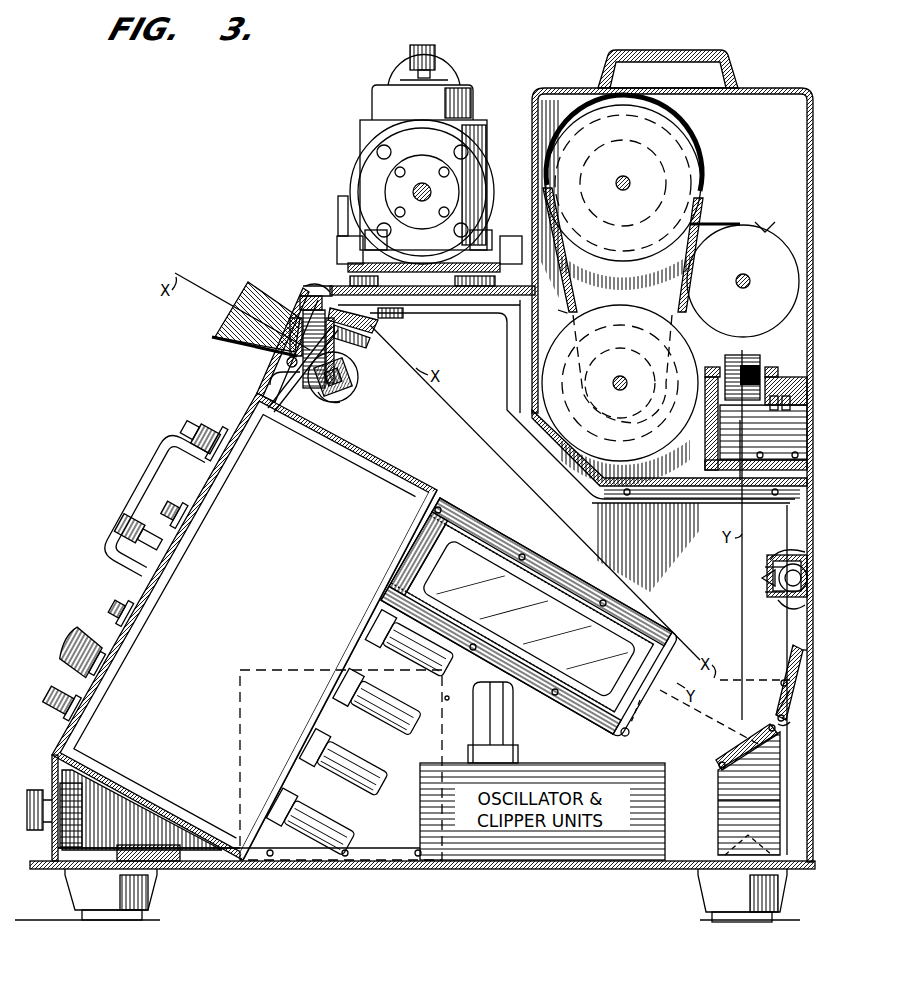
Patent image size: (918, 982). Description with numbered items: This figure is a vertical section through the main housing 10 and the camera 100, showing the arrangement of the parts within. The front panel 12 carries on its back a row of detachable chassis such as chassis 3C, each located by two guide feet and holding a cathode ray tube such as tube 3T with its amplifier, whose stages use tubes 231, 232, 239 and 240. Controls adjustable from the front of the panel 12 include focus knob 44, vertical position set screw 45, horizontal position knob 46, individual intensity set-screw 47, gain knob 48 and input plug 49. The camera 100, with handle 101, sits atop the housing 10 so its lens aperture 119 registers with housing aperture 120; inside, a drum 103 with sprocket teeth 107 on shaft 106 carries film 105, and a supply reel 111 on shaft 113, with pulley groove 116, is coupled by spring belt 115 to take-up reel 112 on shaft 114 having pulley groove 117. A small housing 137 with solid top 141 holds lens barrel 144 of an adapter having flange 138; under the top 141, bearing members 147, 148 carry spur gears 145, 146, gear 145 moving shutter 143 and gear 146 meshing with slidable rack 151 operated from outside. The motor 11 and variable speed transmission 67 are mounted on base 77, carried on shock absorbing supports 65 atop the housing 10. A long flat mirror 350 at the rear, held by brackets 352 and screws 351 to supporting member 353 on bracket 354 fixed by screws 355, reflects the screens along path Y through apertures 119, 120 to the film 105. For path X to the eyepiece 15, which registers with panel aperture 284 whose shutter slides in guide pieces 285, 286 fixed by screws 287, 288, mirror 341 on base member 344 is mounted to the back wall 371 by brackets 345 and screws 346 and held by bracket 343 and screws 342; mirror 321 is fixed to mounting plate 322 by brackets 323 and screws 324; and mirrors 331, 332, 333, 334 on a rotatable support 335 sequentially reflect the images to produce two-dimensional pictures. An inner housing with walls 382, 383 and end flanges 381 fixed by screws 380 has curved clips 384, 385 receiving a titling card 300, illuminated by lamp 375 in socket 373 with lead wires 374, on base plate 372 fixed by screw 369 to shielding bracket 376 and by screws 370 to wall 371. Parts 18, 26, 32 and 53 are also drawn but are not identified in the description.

The housing 10 is at (382, 875).
The motor 11 is at (352, 185).
The front panel 12 is at (250, 428).
The eyepiece 15 is at (245, 295).
The bracket 18 is at (153, 507).
The clip 26 is at (35, 792).
The support block 32 is at (60, 800).
The knob 44 is at (212, 436).
The set screw 45 is at (200, 503).
The knob 46 is at (147, 550).
The set-screw 47 is at (132, 612).
The knob 48 is at (100, 650).
The plug 49 is at (74, 706).
The foot 53 is at (76, 893).
The shock absorbing supports 65 is at (350, 288).
The variable speed transmission 67 is at (372, 108).
The base 77 is at (348, 265).
The camera 100 is at (745, 90).
The handle 101 is at (663, 58).
The revolvable drum 103 is at (686, 290).
The film 105 is at (700, 225).
The shaft 106 is at (750, 281).
The sprocket teeth 107 is at (776, 218).
The supply reel 111 is at (597, 125).
The take-up reel 112 is at (545, 396).
The shaft 113 is at (631, 184).
The shaft 114 is at (627, 383).
The spring belt 115 is at (695, 146).
The pulley groove 116 is at (692, 178).
The pulley groove 117 is at (633, 410).
The lens aperture 119 is at (740, 482).
The aperture 120 is at (722, 482).
The small housing 137 is at (706, 430).
The flange portion 138 is at (760, 365).
The top plate 141 is at (787, 362).
The shutter 143 is at (761, 432).
The lens barrel 144 is at (712, 362).
The spur gear 145 is at (763, 415).
The spur gear 146 is at (789, 415).
The bearing member 147 is at (771, 446).
The bearing member 148 is at (802, 446).
The rack 151 is at (789, 385).
The tube 231 is at (335, 830).
The tube 232 is at (365, 780).
The electron discharge tube 239 is at (390, 728).
The electron discharge tube 240 is at (422, 668).
The aperture 284 is at (290, 328).
The guide piece 285 is at (306, 310).
The guide piece 286 is at (287, 363).
The screw 287 is at (320, 290).
The screw 288 is at (270, 381).
The card 300 is at (648, 715).
The mirror 321 is at (380, 318).
The mounting plate 322 is at (404, 316).
The bracket 323 is at (345, 326).
The screws 324 is at (365, 336).
The mirror 331 is at (300, 400).
The mirror 332 is at (340, 358).
The mirror 333 is at (350, 370).
The mirror 334 is at (345, 385).
The support 335 is at (340, 403).
The mirror 341 is at (782, 694).
The screws 342 is at (803, 662).
The bracket 343 is at (792, 652).
The base member 344 is at (780, 714).
The bracket 345 is at (767, 722).
The screws 346 is at (782, 682).
The mirror 350 is at (742, 745).
The screws 351 is at (720, 752).
The mounting bracket 352 is at (722, 760).
The supporting member 353 is at (722, 778).
The bracket 354 is at (726, 800).
The screws 355 is at (748, 837).
The screw 369 is at (797, 560).
The screws 370 is at (765, 567).
The back wall 371 is at (787, 632).
The base plate 372 is at (770, 592).
The socket 373 is at (800, 555).
The lead wires 374 is at (762, 579).
The lamp 375 is at (790, 608).
The mounting bracket 376 is at (786, 572).
The screws 380 is at (440, 507).
The flanges 381 is at (562, 580).
The wall 382 is at (488, 545).
The wall 383 is at (575, 710).
The clip 384 is at (672, 645).
The clip 385 is at (627, 736).
The chassis 3C is at (372, 478).
The cathode ray tube 3T is at (618, 640).